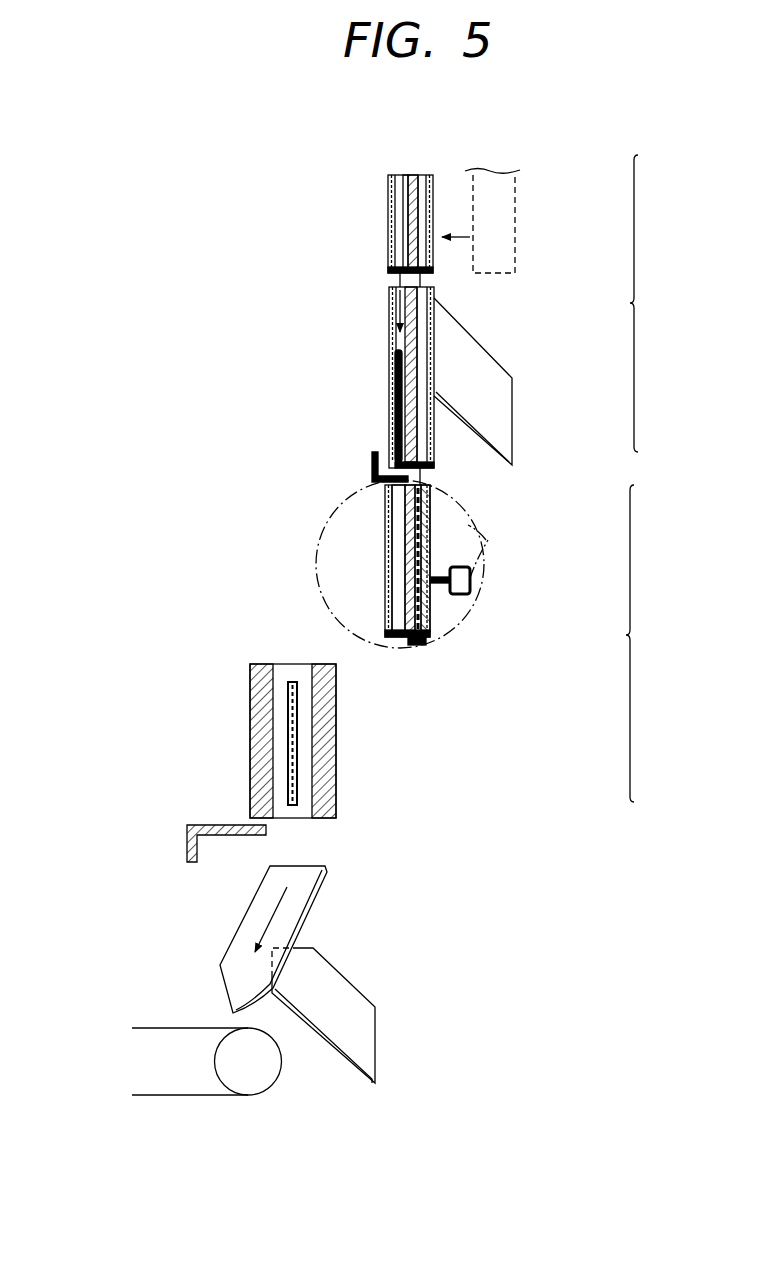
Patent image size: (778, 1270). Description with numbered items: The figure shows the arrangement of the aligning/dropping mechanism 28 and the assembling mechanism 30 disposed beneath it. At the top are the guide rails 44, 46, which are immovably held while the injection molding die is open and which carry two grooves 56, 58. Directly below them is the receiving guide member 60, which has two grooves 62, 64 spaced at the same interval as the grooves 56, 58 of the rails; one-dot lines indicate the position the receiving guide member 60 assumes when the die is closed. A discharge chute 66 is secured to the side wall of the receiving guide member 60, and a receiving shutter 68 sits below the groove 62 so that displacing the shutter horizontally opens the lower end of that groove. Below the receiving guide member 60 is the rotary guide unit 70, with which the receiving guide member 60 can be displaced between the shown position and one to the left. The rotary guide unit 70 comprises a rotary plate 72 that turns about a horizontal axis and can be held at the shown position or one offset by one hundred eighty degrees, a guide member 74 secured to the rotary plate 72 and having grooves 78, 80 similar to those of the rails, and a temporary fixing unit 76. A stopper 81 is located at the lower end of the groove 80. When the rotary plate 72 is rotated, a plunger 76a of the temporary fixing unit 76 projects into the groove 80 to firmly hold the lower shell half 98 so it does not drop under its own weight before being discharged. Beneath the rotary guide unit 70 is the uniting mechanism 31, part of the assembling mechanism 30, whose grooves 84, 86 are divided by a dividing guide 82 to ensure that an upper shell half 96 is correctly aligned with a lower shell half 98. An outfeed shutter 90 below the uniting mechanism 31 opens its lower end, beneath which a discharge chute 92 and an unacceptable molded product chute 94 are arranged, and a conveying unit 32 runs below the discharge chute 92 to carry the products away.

The aligning/dropping mechanism 28 is at (654, 303).
The assembling mechanism 30 is at (649, 643).
The uniting mechanism 31 is at (310, 741).
The conveying unit 32 is at (205, 1095).
The guide rail 44 is at (360, 200).
The guide rail 46 is at (360, 200).
The groove 56 is at (428, 174).
The groove 58 is at (393, 174).
The receiving guide member 60 is at (391, 383).
The groove 62 is at (398, 290).
The groove 64 is at (430, 293).
The discharge chute 66 is at (497, 377).
The receiving shutter 68 is at (372, 455).
The rotary guide unit 70 is at (423, 584).
The rotary plate 72 is at (488, 556).
The guide member 74 is at (390, 585).
The temporary fixing unit 76 is at (468, 592).
The plunger 76a is at (447, 525).
The groove 78 is at (390, 500).
The groove 80 is at (425, 492).
The stopper 81 is at (425, 645).
The dividing guide 82 is at (290, 770).
The groove 84 is at (272, 693).
The groove 86 is at (312, 683).
The outfeed shutter 90 is at (192, 862).
The discharge chute 92 is at (308, 912).
The unacceptable molded product chute 94 is at (372, 1043).
The upper shell half 96 is at (395, 393).
The lower shell half 98 is at (432, 630).